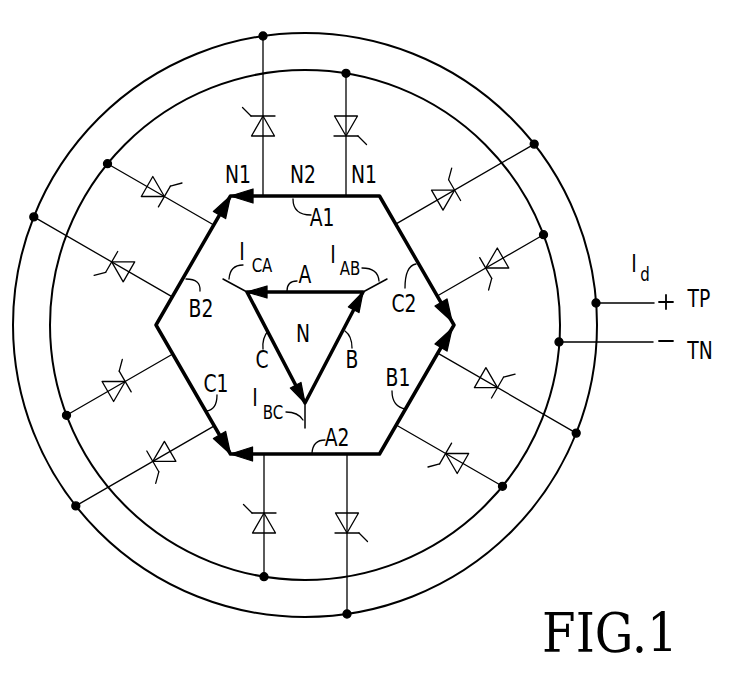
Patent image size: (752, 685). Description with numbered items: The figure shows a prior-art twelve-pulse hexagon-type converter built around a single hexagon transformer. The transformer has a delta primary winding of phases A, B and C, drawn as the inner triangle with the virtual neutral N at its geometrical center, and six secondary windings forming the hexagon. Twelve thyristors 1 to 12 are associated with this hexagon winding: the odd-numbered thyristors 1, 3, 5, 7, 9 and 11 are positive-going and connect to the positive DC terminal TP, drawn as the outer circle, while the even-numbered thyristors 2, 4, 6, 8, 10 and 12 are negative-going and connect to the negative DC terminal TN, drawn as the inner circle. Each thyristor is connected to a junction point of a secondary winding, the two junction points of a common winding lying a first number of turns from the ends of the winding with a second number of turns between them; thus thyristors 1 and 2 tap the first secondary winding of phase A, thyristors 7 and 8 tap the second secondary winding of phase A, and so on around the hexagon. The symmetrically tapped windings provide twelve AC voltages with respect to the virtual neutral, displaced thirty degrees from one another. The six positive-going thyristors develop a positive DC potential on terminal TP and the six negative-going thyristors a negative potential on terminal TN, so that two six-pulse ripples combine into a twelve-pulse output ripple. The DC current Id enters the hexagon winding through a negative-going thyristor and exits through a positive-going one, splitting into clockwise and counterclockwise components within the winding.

The thyristor 1 is at (250, 114).
The thyristor 2 is at (359, 132).
The thyristor 3 is at (467, 182).
The thyristor 4 is at (492, 263).
The thyristor 5 is at (509, 387).
The thyristor 6 is at (451, 462).
The thyristor 7 is at (360, 536).
The thyristor 8 is at (252, 517).
The thyristor 9 is at (143, 468).
The thyristor 10 is at (118, 382).
The thyristor 11 is at (101, 262).
The thyristor 12 is at (159, 183).